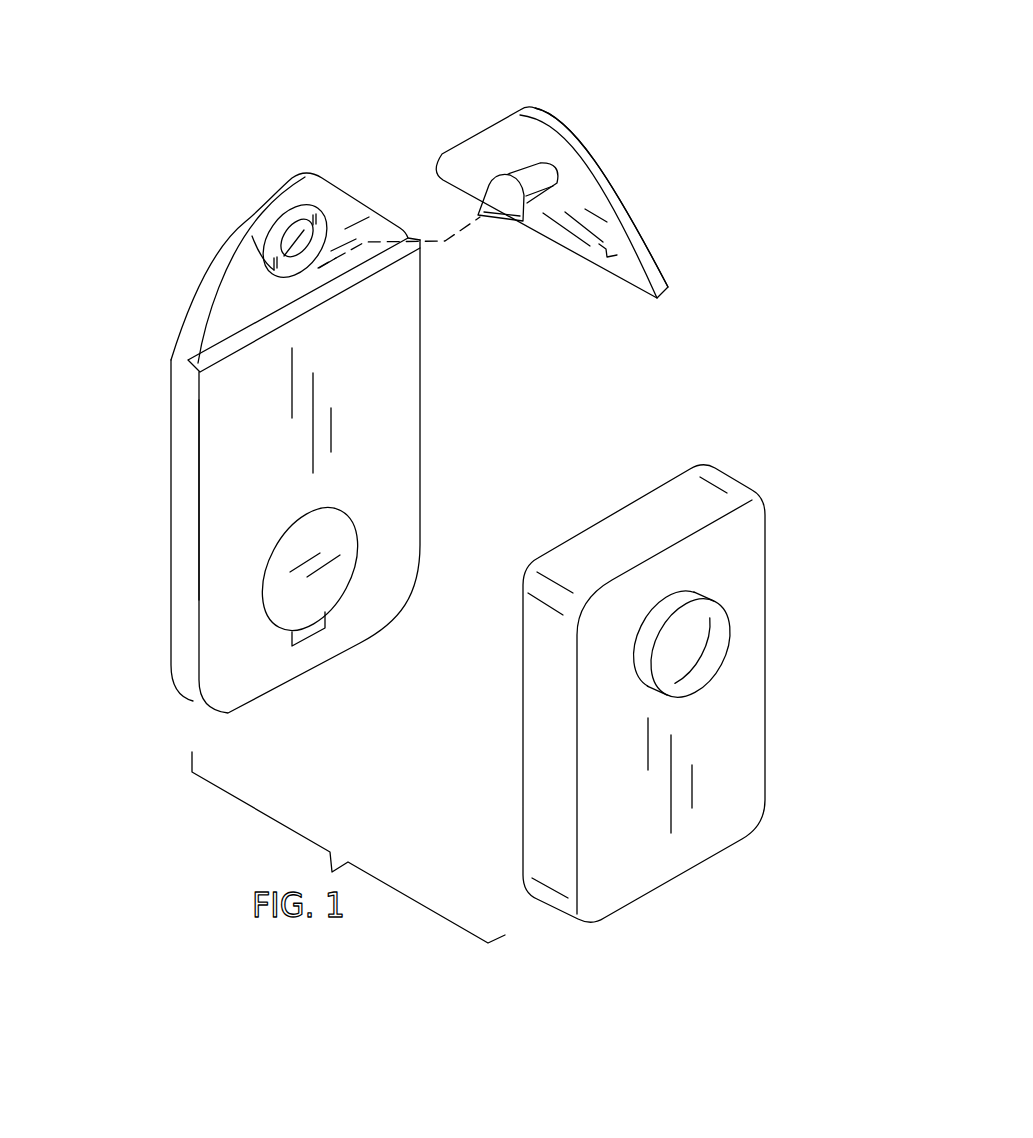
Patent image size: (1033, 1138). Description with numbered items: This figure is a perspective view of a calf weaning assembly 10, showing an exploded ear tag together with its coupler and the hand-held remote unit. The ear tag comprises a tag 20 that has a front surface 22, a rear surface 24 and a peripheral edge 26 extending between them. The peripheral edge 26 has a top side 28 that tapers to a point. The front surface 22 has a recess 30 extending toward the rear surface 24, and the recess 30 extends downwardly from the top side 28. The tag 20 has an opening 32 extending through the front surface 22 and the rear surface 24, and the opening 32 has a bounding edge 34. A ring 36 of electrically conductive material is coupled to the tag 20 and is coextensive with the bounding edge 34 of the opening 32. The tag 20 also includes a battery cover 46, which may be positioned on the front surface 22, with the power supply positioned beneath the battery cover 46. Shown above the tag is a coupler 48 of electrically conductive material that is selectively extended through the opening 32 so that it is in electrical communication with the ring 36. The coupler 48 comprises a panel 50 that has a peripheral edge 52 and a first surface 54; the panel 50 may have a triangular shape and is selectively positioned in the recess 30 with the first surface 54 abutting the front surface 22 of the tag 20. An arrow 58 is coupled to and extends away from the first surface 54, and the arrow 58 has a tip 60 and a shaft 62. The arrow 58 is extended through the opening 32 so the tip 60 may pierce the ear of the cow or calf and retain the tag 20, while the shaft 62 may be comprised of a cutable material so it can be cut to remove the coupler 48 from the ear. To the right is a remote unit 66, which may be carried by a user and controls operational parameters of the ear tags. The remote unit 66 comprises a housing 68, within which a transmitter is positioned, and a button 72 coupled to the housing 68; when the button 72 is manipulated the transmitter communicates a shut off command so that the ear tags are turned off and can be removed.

The calf weaning assembly 10 is at (766, 122).
The tag 20 is at (192, 701).
The front surface 22 is at (403, 398).
The rear surface 24 is at (171, 463).
The peripheral edge 26 is at (183, 513).
The top side 28 is at (280, 183).
The recess 30 is at (368, 236).
The opening 32 is at (304, 230).
The bounding edge 34 is at (312, 250).
The ring 36 is at (276, 250).
The battery cover 46 is at (277, 624).
The coupler 48 is at (527, 85).
The panel 50 is at (590, 143).
The peripheral edge 52 is at (633, 232).
The first surface 54 is at (618, 256).
The arrow 58 is at (491, 163).
The tip 60 is at (498, 222).
The shaft 62 is at (550, 205).
The remote unit 66 is at (725, 460).
The housing 68 is at (543, 555).
The button 72 is at (713, 653).